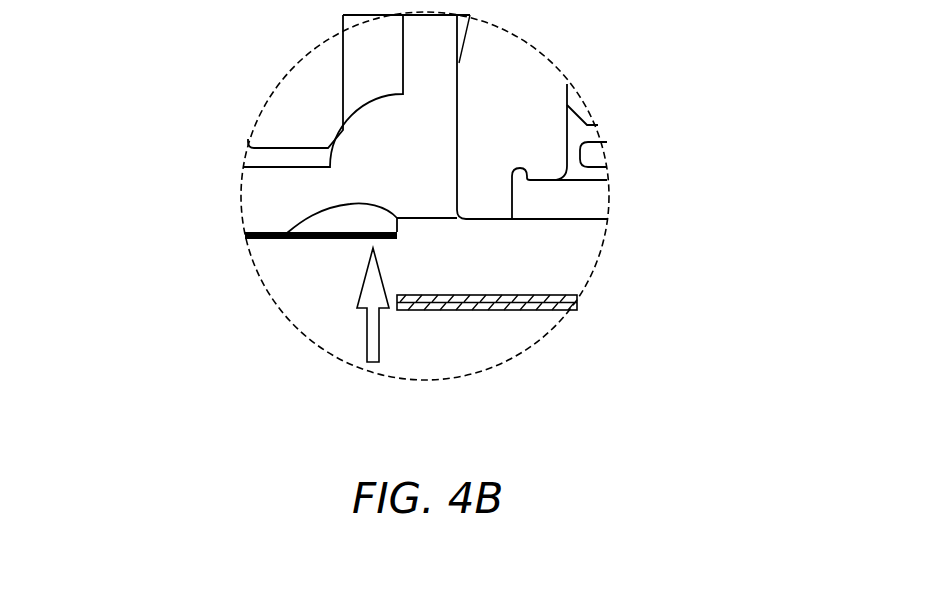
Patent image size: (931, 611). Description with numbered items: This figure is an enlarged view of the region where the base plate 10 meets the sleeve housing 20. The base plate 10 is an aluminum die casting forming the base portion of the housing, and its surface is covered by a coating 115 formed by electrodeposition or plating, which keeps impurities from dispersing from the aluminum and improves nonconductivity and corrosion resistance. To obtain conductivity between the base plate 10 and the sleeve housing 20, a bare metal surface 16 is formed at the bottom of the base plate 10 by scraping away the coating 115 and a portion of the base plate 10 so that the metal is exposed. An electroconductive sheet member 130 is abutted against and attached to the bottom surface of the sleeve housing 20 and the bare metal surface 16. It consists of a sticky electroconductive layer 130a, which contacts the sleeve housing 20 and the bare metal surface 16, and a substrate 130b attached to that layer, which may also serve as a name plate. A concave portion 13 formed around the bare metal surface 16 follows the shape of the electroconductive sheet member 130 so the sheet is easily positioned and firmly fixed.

The base plate 10 is at (307, 197).
The bare metal surface 16 is at (432, 217).
The concave portion 13 is at (287, 233).
The coating 115 is at (318, 240).
The sleeve housing 20 is at (525, 104).
The electroconductive sheet member 130 is at (622, 307).
The electroconductive layer 130a is at (568, 294).
The substrate 130b is at (522, 309).